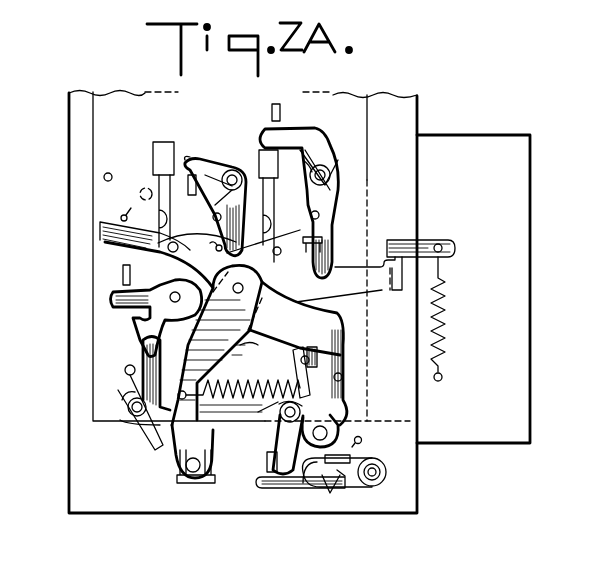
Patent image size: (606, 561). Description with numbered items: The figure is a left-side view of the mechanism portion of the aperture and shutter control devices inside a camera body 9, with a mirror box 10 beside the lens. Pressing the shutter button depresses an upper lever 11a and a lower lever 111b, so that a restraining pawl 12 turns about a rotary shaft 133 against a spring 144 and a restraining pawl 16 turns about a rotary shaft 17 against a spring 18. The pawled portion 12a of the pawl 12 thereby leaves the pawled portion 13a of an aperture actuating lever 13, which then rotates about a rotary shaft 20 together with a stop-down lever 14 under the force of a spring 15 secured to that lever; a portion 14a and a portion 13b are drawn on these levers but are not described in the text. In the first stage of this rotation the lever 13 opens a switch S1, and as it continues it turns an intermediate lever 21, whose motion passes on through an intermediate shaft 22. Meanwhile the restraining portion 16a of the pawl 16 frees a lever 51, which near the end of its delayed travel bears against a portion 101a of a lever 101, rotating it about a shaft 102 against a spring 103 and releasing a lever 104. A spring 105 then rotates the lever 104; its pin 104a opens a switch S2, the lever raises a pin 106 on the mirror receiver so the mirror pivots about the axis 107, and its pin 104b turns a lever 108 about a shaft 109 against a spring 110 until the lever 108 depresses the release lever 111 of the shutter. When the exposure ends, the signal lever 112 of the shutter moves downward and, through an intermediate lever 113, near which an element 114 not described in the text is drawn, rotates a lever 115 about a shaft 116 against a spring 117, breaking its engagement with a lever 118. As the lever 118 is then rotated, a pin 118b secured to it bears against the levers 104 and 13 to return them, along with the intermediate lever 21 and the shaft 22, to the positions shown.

The camera body 9 is at (69, 160).
The mirror box 10 is at (93, 187).
The switch S2 is at (153, 148).
The pivot axis 107 is at (111, 173).
The pin 106 is at (129, 204).
The lever 108 is at (190, 165).
The release lever 111 is at (201, 168).
The shaft 109 is at (233, 170).
The spring 110 is at (213, 217).
The pin 104a is at (165, 249).
The pin 104b is at (178, 248).
The lever 104 is at (313, 326).
The rotary shaft 20 is at (245, 289).
The lever 118 is at (200, 370).
The pin 118b is at (254, 358).
The spring 105 is at (239, 400).
The lower lever 111b is at (266, 463).
The portion of lever 101a is at (293, 472).
The latch pivot 114 is at (170, 294).
The intermediate lever 113 is at (112, 298).
The signal lever 112 is at (123, 277).
The spring 117 is at (125, 367).
The shaft 116 is at (132, 413).
The lever 115 is at (143, 427).
The spring 103 is at (303, 412).
The lever 101 is at (275, 447).
The shaft 102 is at (278, 428).
The intermediate lever 21 is at (323, 388).
The intermediate shaft 22 is at (332, 435).
The rotary shaft 17 is at (387, 472).
The restraining pawl 16 is at (290, 490).
The restraining portion 16a is at (320, 470).
The spring 18 is at (337, 467).
The lever 51 is at (348, 454).
The switch S1 is at (278, 168).
The pin 13b is at (279, 247).
The restraining pawl 12 is at (290, 133).
The upper lever 11a is at (286, 98).
The spring 144 is at (305, 158).
The rotary shaft 133 is at (323, 170).
The pawled portion 13a is at (317, 236).
The pawled portion 12a is at (325, 243).
The aperture actuating lever 13 is at (382, 290).
The stop-down lever 14 is at (435, 238).
The pin 14a is at (443, 248).
The spring 15 is at (447, 338).